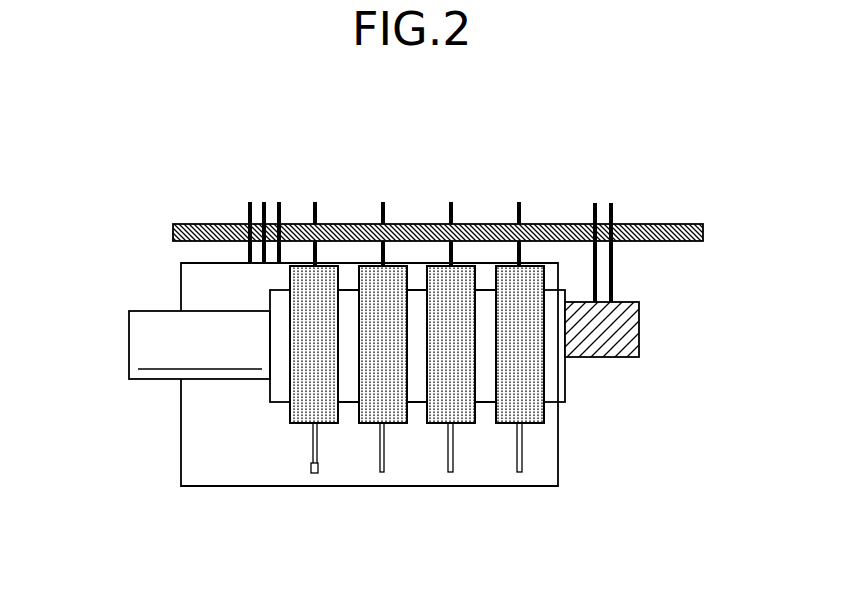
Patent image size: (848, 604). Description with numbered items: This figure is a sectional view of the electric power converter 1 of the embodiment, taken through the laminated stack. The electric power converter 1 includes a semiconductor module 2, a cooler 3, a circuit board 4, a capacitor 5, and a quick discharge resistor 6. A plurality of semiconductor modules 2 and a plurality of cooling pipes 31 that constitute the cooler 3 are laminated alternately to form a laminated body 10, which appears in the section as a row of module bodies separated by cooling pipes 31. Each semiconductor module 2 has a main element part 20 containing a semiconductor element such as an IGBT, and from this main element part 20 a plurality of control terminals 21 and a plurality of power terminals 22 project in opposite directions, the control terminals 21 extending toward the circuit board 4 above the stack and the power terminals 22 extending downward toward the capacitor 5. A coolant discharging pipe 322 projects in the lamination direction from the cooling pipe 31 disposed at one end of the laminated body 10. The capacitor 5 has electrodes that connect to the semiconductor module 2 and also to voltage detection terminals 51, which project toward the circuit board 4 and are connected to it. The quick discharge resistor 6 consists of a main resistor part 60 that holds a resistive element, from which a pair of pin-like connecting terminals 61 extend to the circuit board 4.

The electric power converter 1 is at (572, 162).
The semiconductor module 2 is at (530, 413).
The main element part 20 is at (310, 400).
The control terminals 21 is at (312, 203).
The power terminals 22 is at (317, 470).
The cooler 3 is at (558, 392).
The cooling pipe 31 is at (555, 380).
The coolant discharging pipe 322 is at (167, 328).
The circuit board 4 is at (667, 223).
The capacitor 5 is at (485, 468).
The voltage detection terminals 51 is at (246, 211).
The quick discharge resistor 6 is at (625, 342).
The main resistor part 60 is at (640, 320).
The connecting terminals 61 is at (615, 268).
The laminated body 10 is at (258, 393).